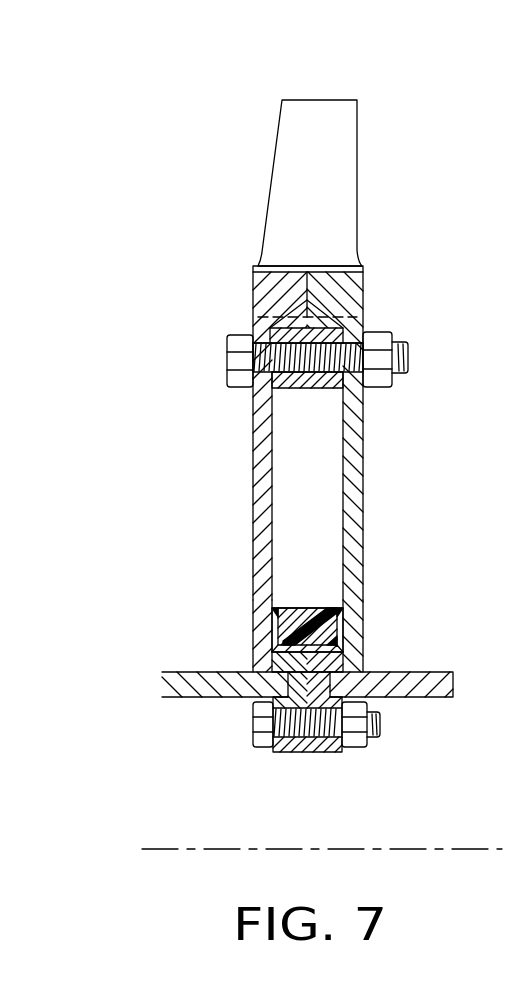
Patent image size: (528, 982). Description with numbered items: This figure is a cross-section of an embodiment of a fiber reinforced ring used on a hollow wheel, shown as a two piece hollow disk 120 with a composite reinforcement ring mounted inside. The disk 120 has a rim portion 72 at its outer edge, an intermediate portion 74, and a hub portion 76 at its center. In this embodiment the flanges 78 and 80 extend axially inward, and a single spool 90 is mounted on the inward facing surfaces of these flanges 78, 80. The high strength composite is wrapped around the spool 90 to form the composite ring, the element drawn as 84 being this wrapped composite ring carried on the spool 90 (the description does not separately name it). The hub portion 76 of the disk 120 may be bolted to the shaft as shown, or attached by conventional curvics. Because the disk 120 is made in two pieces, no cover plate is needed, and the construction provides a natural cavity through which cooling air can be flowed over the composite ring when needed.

The two piece hollow disk 120 is at (381, 466).
The rim portion 72 is at (367, 298).
The intermediate portion 74 is at (367, 516).
The hub portion 76 is at (262, 612).
The spool 90 is at (284, 611).
The resilient insert 84 is at (292, 625).
The flange 78 is at (335, 663).
The flange 80 is at (280, 660).